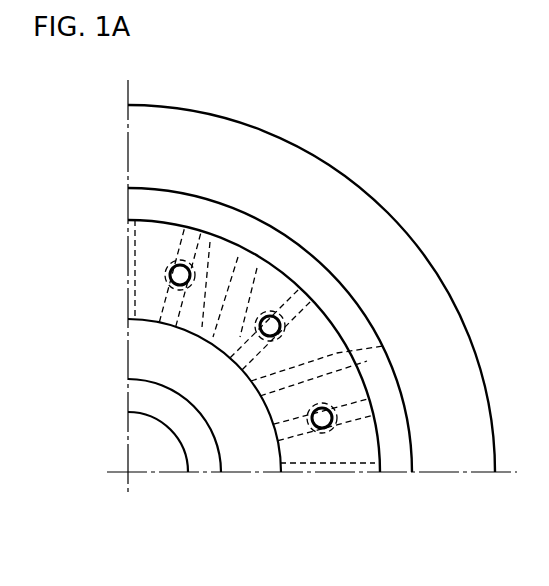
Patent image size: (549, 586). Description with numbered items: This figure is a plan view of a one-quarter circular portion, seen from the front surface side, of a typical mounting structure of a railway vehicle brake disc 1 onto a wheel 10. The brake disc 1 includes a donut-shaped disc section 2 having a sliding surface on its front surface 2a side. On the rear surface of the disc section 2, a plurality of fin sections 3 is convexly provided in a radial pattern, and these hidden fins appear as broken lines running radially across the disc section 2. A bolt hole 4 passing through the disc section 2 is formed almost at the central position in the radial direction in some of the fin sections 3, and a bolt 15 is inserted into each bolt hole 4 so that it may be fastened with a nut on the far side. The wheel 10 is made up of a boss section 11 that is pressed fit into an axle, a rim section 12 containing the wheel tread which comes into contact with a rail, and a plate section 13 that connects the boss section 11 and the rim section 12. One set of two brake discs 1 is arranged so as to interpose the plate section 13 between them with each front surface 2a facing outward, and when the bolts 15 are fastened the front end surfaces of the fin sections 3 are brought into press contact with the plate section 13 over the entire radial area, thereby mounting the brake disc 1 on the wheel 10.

The brake disc 1 is at (149, 218).
The wheel 10 is at (224, 106).
The rim section 12 is at (135, 151).
The disc section 2 is at (375, 440).
The front surface 2a is at (358, 447).
The fin sections 3 is at (335, 253).
The bolt hole 4 is at (176, 284).
The bolt 15 is at (172, 270).
The plate section 13 is at (135, 353).
The boss section 11 is at (135, 397).